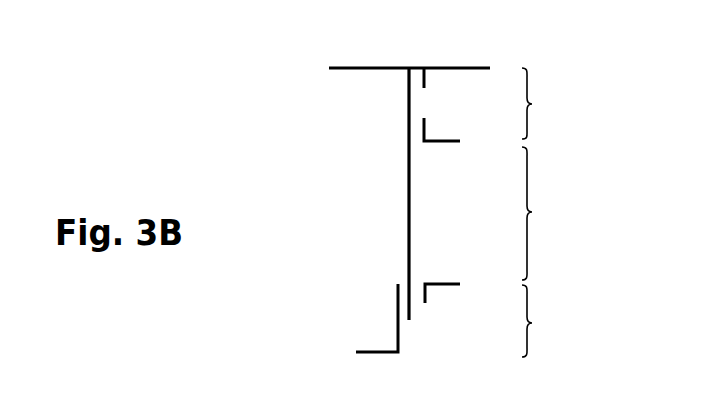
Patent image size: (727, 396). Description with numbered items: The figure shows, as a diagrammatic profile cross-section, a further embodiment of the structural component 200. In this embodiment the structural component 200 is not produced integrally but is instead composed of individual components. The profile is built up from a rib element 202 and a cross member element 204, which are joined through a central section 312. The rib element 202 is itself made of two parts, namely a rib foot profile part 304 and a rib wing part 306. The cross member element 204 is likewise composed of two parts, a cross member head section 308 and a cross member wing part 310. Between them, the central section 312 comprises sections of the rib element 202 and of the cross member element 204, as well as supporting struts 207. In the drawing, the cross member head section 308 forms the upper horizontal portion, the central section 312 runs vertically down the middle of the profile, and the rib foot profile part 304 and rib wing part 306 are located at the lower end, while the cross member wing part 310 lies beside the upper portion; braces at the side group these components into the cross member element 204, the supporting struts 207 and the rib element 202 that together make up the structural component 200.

The structural component 200 is at (262, 155).
The rib element 202 is at (532, 323).
The cross member element 204 is at (532, 104).
The supporting struts 207 is at (532, 212).
The rib foot profile part 304 is at (378, 350).
The rib wing part 306 is at (441, 287).
The cross member head section 308 is at (361, 70).
The cross member wing part 310 is at (440, 142).
The central section 312 is at (408, 217).